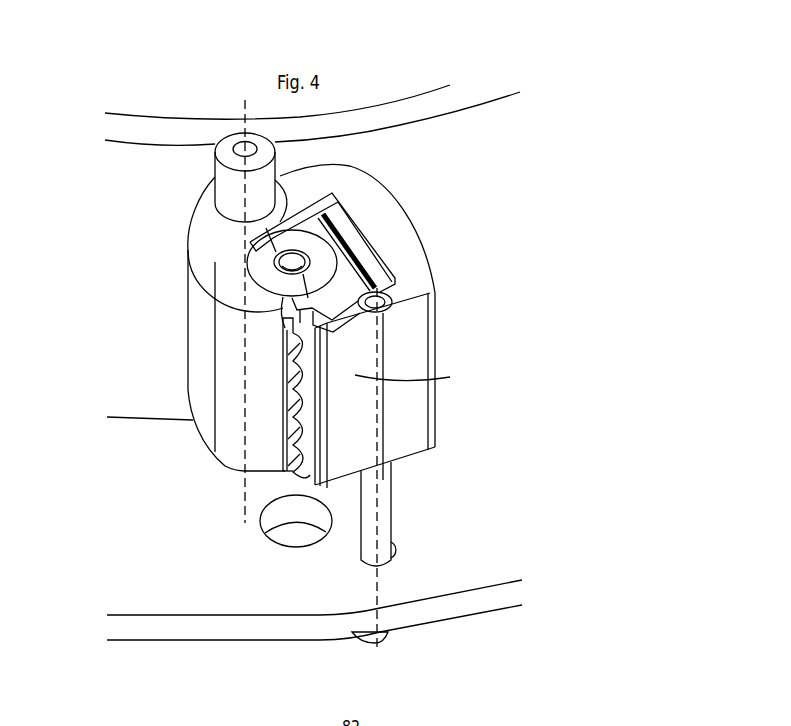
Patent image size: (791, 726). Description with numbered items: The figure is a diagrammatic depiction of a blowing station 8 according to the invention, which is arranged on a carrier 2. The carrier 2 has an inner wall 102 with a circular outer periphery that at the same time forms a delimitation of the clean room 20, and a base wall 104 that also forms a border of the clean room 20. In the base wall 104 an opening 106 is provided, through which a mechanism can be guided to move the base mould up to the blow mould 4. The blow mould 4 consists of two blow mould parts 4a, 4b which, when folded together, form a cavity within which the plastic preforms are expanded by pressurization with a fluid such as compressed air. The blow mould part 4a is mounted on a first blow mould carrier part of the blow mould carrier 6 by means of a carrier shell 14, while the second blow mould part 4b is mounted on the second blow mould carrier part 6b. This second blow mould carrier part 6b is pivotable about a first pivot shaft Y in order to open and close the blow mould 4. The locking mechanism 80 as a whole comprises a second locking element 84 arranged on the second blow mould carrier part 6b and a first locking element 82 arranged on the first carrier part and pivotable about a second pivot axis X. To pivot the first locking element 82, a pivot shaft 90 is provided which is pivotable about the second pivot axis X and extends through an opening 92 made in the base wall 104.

The carrier 2 is at (85, 520).
The blow mould 4 is at (258, 261).
The blow mould part 4a is at (318, 264).
The second blow mould part 4b is at (263, 275).
The housing 6 is at (428, 212).
The second blow mould carrier part 6b is at (220, 267).
The blowing station 8 is at (178, 398).
The carrier shell 14 is at (335, 220).
The clean room 20 is at (193, 556).
The locking mechanism 80 is at (405, 486).
The first locking element 82 is at (437, 392).
The second locking element 84 is at (300, 390).
The pivot shaft 90 is at (382, 535).
The opening 92 is at (399, 552).
The inner wall 102 is at (482, 152).
The base wall 104 is at (212, 602).
The opening 106 is at (297, 538).
The second pivot axis X is at (392, 300).
The first pivot shaft Y is at (245, 150).